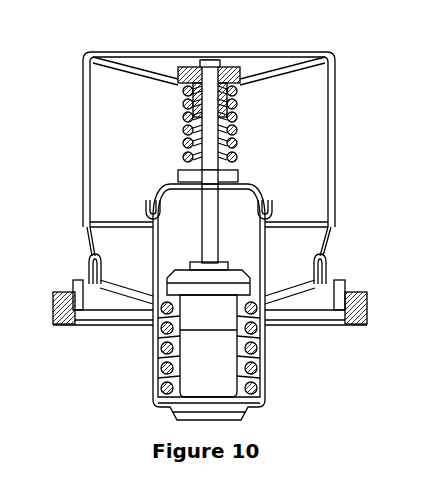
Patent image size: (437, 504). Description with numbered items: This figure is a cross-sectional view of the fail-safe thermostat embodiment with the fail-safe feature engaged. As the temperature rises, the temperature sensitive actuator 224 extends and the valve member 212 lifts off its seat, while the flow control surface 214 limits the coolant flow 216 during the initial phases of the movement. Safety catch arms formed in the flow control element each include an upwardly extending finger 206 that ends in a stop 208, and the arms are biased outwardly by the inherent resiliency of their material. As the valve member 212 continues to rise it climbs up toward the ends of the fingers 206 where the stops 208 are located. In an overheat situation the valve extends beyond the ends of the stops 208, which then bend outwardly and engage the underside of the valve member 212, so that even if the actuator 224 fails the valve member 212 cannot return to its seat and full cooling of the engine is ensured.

The finger 206 is at (90, 243).
The stop 208 is at (88, 226).
The valve member 212 is at (333, 185).
The flow control surface 214 is at (328, 262).
The coolant flow 216 is at (300, 236).
The temperature sensitive actuator 224 is at (212, 360).